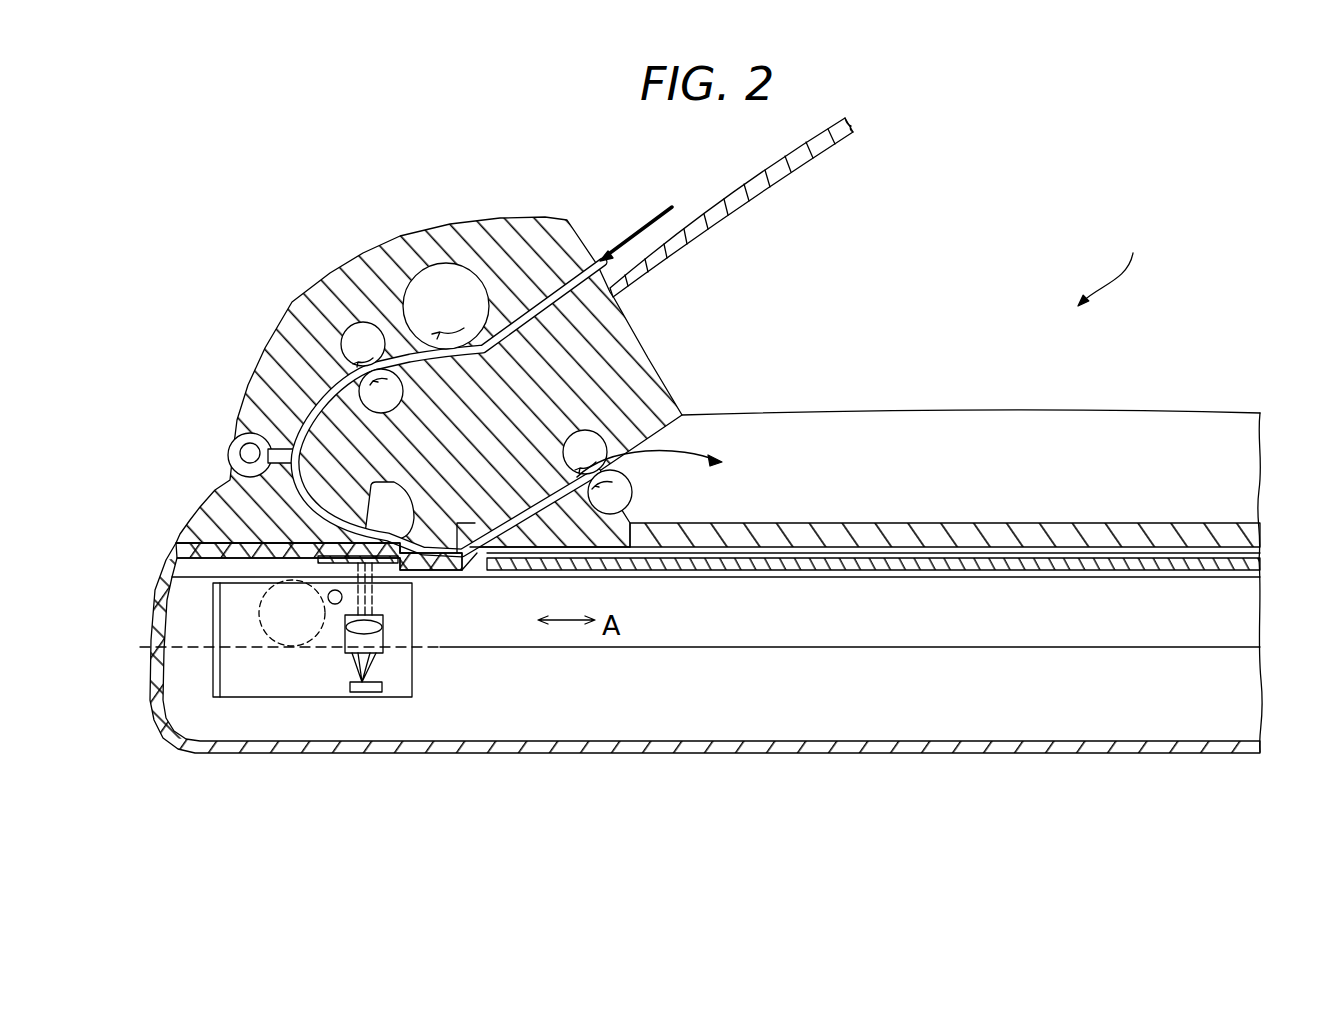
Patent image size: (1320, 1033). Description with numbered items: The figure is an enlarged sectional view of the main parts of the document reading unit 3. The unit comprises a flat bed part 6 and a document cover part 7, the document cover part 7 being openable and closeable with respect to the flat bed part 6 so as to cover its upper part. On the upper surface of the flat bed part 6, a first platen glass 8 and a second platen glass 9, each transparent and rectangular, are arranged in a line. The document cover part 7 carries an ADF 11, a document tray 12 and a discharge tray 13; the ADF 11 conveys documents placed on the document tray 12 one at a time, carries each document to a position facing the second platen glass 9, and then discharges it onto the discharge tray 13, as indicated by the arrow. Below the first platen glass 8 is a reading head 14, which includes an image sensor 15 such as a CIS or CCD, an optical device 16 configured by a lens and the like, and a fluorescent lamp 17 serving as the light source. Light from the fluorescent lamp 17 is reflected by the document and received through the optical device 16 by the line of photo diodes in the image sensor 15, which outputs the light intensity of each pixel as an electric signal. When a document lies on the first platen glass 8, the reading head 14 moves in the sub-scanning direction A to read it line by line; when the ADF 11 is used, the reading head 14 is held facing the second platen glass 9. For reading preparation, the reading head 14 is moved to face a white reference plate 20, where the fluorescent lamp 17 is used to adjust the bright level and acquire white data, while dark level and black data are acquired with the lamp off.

The document reading unit 3 is at (1140, 250).
The flat bed part 6 is at (1238, 681).
The document cover part 7 is at (1233, 470).
The first platen glass 8 is at (715, 565).
The second platen glass 9 is at (443, 560).
The ADF (Automatic Document Feeder) 11 is at (292, 337).
The document tray 12 is at (730, 212).
The discharge tray 13 is at (822, 515).
The reading head 14 is at (392, 690).
The image sensor 15 is at (350, 687).
The optical device 16 is at (347, 648).
The fluorescent lamp 17 is at (331, 601).
The white reference plate 20 is at (305, 567).